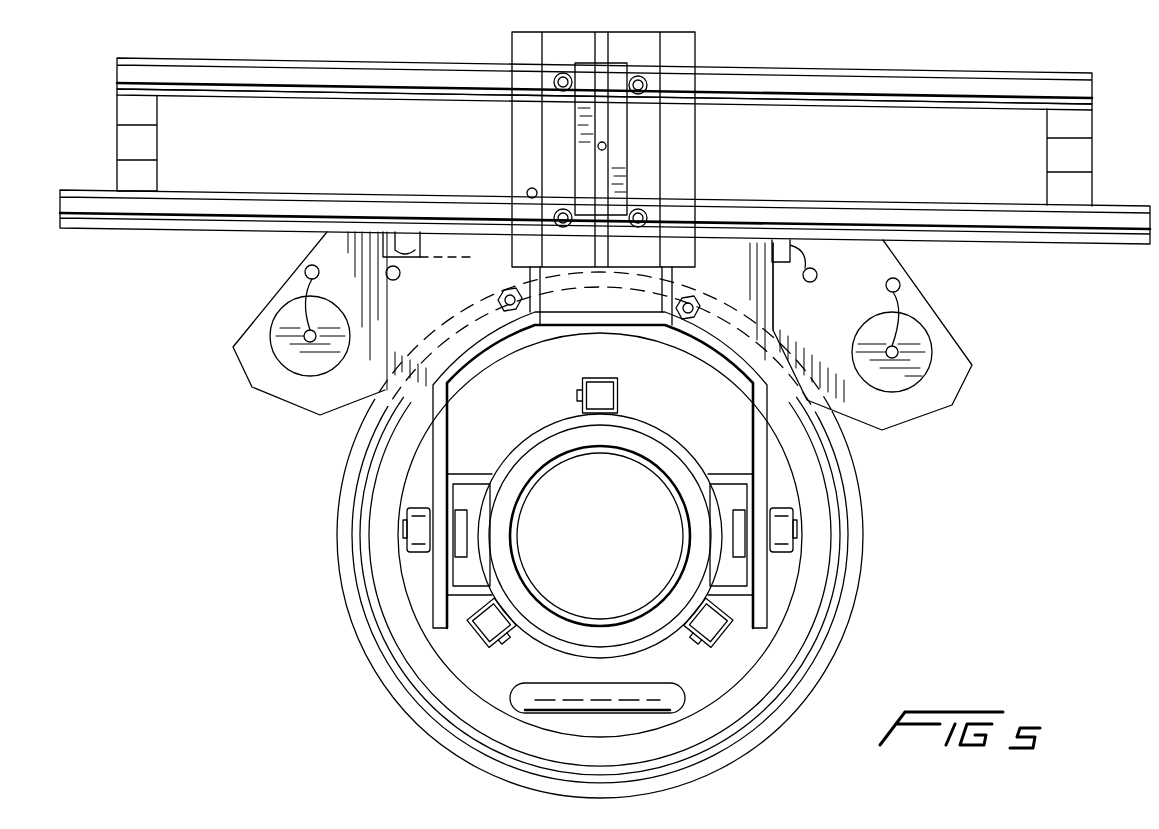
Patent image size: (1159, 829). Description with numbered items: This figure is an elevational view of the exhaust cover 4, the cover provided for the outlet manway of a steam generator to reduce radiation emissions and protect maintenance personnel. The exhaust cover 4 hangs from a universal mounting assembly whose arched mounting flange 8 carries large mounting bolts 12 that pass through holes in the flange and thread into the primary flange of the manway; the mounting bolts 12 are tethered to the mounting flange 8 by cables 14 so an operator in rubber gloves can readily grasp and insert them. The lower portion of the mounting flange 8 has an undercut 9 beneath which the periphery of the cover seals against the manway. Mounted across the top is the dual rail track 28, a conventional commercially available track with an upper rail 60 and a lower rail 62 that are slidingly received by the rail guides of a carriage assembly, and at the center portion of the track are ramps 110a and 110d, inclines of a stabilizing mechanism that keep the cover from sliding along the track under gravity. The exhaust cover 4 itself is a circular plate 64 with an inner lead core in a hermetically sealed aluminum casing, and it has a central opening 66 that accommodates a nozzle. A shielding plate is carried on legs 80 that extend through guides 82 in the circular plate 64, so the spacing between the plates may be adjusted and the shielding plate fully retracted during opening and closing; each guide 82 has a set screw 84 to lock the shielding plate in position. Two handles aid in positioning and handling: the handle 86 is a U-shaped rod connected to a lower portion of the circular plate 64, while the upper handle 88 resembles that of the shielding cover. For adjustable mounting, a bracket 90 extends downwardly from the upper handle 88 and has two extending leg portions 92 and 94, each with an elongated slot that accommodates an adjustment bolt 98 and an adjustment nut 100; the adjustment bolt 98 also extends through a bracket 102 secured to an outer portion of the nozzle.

The exhaust cover 4 is at (332, 650).
The mounting flange 8 is at (962, 345).
The undercut 9 is at (372, 420).
The mounting bolts 12 is at (272, 336).
The cables 14 is at (305, 272).
The dual rail track 28 is at (1012, 73).
The upper rail 60 is at (1092, 88).
The lower rail 62 is at (1140, 215).
The circular plate 64 is at (822, 606).
The central opening 66 is at (662, 640).
The legs 80 is at (600, 536).
The guides 82 is at (600, 378).
The set screw 84 is at (578, 392).
The handle 86 is at (522, 717).
The upper handle 88 is at (575, 118).
The bracket 90 is at (672, 292).
The leg portion 92 is at (768, 460).
The leg portion 94 is at (430, 458).
The adjustment bolt 98 is at (455, 538).
The adjustment nut 100 is at (405, 516).
The bracket 102 is at (483, 476).
The ramp 110a is at (117, 132).
The ramp 110d is at (1092, 155).